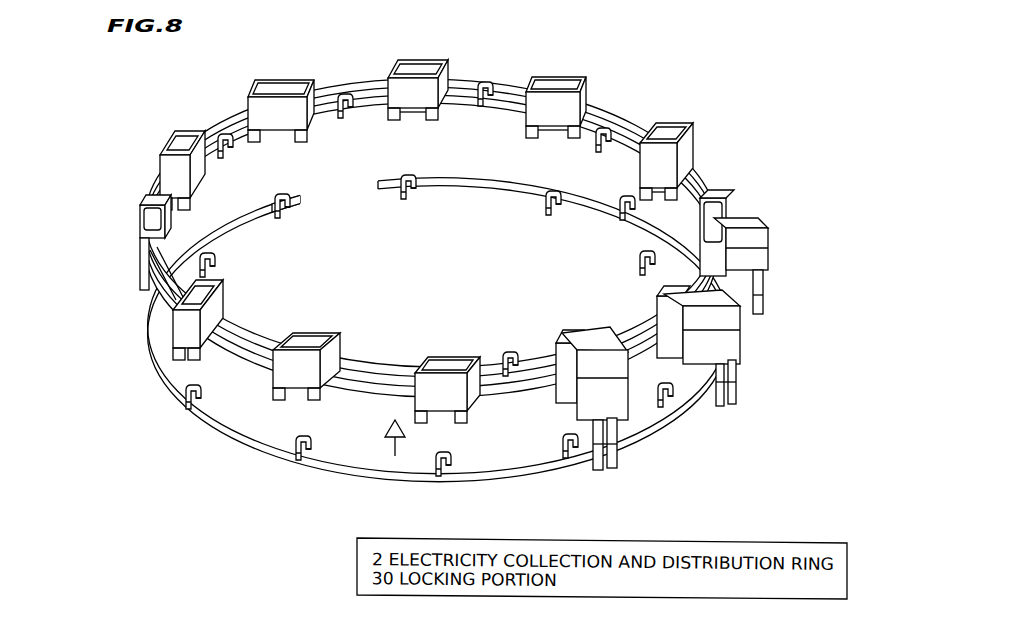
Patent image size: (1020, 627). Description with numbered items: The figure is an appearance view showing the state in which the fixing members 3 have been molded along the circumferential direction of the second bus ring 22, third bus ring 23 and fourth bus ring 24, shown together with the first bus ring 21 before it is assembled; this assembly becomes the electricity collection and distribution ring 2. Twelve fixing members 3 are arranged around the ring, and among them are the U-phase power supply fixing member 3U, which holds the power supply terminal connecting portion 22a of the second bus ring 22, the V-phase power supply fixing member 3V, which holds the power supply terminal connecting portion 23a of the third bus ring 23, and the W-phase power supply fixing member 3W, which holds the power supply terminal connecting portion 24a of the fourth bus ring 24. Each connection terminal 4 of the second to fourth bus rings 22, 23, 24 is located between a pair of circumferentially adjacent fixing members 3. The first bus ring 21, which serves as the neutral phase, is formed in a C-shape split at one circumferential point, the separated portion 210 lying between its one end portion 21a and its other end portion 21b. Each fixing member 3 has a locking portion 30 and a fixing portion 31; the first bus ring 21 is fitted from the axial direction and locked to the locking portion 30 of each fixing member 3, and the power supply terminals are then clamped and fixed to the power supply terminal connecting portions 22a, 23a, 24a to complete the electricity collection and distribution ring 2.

The electricity collection and distribution ring 2 is at (680, 63).
The fixing member 3 is at (478, 243).
The U-phase power supply fixing member 3U is at (758, 252).
The V-phase power supply fixing member 3V is at (737, 346).
The W-phase power supply fixing member 3W is at (593, 398).
The connection terminal 4 is at (640, 208).
The first bus ring 21 is at (379, 308).
The one end portion 21a is at (371, 178).
The another end portion 21b is at (316, 191).
The separated portion 210 is at (340, 194).
The second bus ring 22 is at (412, 373).
The power supply terminal connecting portion 22a is at (763, 282).
The third bus ring 23 is at (388, 383).
The power supply terminal connecting portion 23a is at (734, 366).
The fourth bus ring 24 is at (373, 390).
The power supply terminal connecting portion 24a is at (617, 424).
The locking portion 30 is at (396, 127).
The fixing portion 31 is at (418, 77).